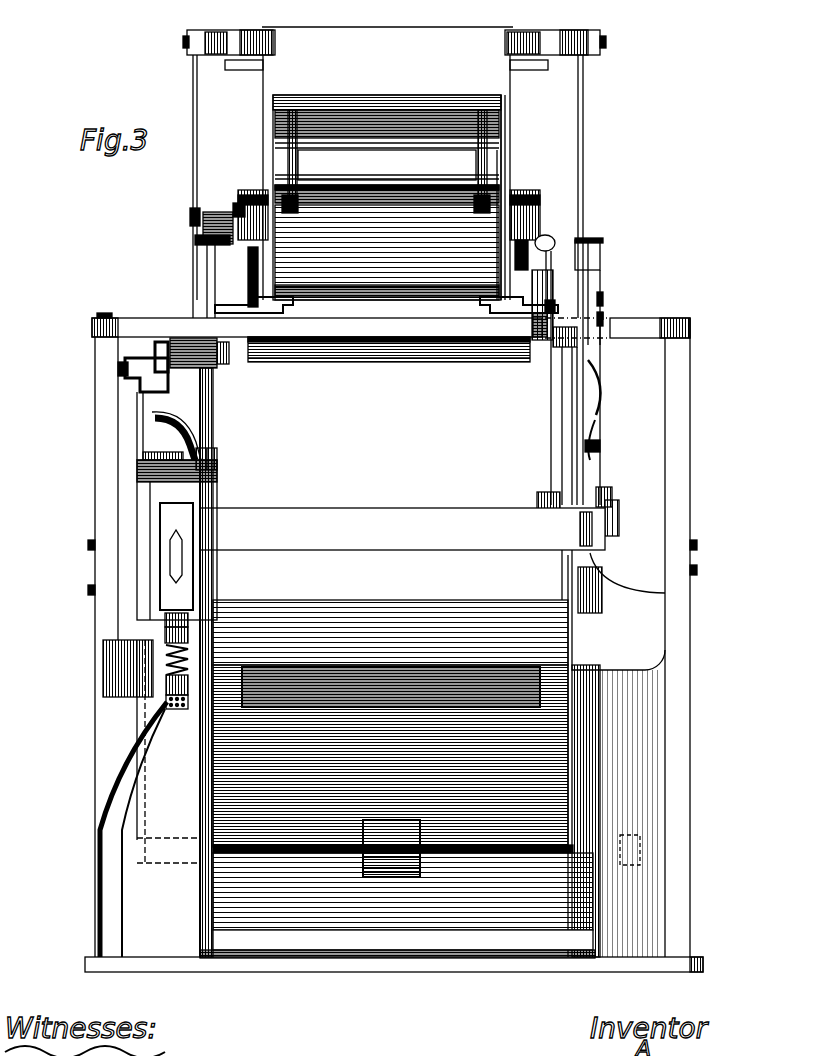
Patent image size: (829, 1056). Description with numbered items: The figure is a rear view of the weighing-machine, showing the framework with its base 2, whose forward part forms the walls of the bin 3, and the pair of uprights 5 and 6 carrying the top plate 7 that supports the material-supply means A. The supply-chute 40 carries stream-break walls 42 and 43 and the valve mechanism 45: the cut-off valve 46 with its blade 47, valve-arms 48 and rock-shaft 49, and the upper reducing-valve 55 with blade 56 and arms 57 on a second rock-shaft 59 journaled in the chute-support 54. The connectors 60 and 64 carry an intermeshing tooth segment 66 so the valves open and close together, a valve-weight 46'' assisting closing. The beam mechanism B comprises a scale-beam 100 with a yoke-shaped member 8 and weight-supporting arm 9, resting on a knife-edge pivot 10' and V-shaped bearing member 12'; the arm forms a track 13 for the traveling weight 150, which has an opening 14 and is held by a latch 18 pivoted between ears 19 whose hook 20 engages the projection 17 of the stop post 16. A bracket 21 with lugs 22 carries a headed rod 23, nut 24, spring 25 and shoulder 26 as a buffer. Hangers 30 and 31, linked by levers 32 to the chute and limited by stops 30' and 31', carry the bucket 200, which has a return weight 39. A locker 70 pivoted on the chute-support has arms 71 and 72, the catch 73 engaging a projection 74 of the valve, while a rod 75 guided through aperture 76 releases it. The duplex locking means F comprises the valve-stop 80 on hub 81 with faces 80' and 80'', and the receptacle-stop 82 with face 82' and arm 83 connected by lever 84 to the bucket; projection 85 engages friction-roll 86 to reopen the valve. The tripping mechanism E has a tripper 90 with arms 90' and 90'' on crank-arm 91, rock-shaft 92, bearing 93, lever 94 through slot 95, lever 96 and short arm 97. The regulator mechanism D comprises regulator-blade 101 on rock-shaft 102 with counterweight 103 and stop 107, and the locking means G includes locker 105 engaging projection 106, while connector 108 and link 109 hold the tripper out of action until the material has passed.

The base 2 is at (580, 962).
The bin 3 is at (598, 674).
The upright or side frame 5 is at (682, 492).
The upright or side frame 6 is at (100, 461).
The top plate 7 is at (640, 322).
The yoke-shaped member 8 is at (328, 514).
The weight-supporting arm 9 is at (183, 555).
The knife-edge pivot member 10' is at (627, 552).
The V-shaped bearing member 12' is at (630, 510).
The track 13 is at (182, 538).
The opening 14 is at (275, 108).
The post or bar 16 is at (167, 522).
The projection 17 is at (185, 493).
The latch 18 is at (198, 442).
The projections or ears 19 is at (214, 452).
The hook 20 is at (185, 460).
The arm or bracket 21 is at (102, 746).
The lugs 22 is at (194, 632).
The headed rod 23 is at (195, 617).
The nut 24 is at (166, 702).
The spring 25 is at (165, 663).
The shoulder 26 is at (165, 648).
The hanger 30 is at (181, 186).
The stop 30' is at (244, 76).
The hanger 31 is at (597, 280).
The stop 31' is at (536, 78).
The links or levers 32 is at (262, 40).
The weight 39 is at (480, 672).
The supply-chute 40 is at (505, 96).
The stream-break wall 42 is at (427, 252).
The stream-break wall 43 is at (410, 160).
The valve mechanism 45 is at (505, 180).
The cut-off valve 46 is at (389, 359).
The valve-weight 46'' is at (386, 314).
The valve plate or blade 47 is at (337, 355).
The valve-arms 48 is at (248, 278).
The rock-shaft 49 is at (600, 255).
The chute-support 54 is at (262, 190).
The reducing-valve 55 is at (358, 114).
The valve plate or blade 56 is at (425, 122).
The valve-arms 57 is at (298, 163).
The rock-shaft 59 is at (457, 202).
The slotted link or lever 60 is at (240, 205).
The lever 64 is at (293, 217).
The rack or tooth segment 66 is at (200, 237).
The locker 70 is at (552, 240).
The extending arm 71 is at (550, 236).
The depending arm 72 is at (523, 297).
The catch 73 is at (533, 312).
The projection 74 is at (540, 306).
The rod 75 is at (552, 345).
The aperture 76 is at (513, 348).
The stop 80 is at (610, 294).
The stop-face 80' is at (661, 341).
The stop-face 80'' is at (626, 343).
The hub 81 is at (606, 232).
The stop 82 is at (618, 310).
The stop-face 82' is at (631, 293).
The projecting arm 83 is at (600, 408).
The lever 84 is at (600, 452).
The projection 85 is at (572, 370).
The friction-roll 86 is at (562, 348).
The tripper 90 is at (109, 384).
The tripper arm 90' is at (115, 400).
The tripper arm 90'' is at (145, 364).
The crank-arm 91 is at (160, 352).
The rock-shaft 92 is at (229, 357).
The bearing 93 is at (200, 362).
The lever 94 is at (207, 300).
The slot 95 is at (208, 328).
The lever 96 is at (193, 216).
The short arm 97 is at (240, 240).
The scale-beam 100 is at (604, 488).
The regulator-blade 101 is at (540, 893).
The rock-shaft 102 is at (640, 850).
The counterbalancing-weight 103 is at (402, 870).
The locker or stop 105 is at (173, 840).
The stop or projection 106 is at (215, 638).
The stop 107 is at (323, 933).
The connector 108 is at (125, 784).
The link or lever 109 is at (125, 838).
The traveling weight 150 is at (219, 480).
The receptacle or bucket 200 is at (553, 636).
The material-supply means A is at (525, 149).
The beam mechanism B is at (234, 482).
The regulator mechanism D is at (403, 941).
The tripping mechanism E is at (156, 426).
The duplex locking means F is at (560, 292).
The locking means G is at (149, 740).